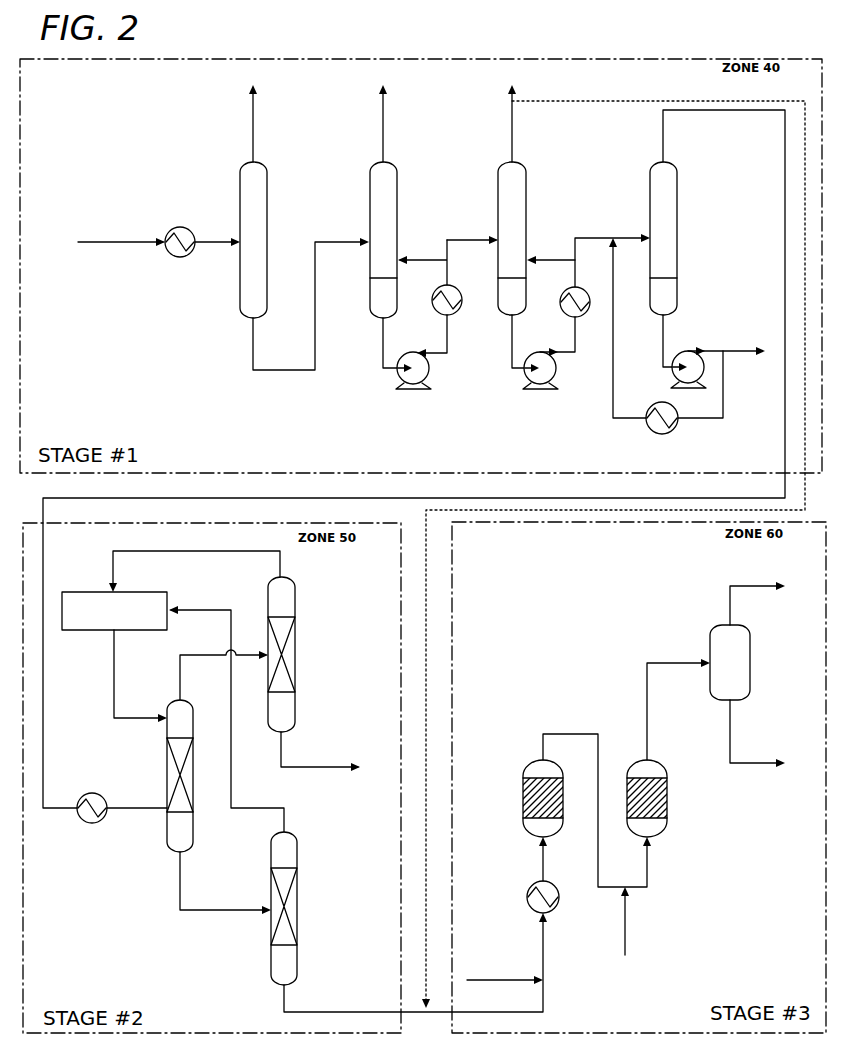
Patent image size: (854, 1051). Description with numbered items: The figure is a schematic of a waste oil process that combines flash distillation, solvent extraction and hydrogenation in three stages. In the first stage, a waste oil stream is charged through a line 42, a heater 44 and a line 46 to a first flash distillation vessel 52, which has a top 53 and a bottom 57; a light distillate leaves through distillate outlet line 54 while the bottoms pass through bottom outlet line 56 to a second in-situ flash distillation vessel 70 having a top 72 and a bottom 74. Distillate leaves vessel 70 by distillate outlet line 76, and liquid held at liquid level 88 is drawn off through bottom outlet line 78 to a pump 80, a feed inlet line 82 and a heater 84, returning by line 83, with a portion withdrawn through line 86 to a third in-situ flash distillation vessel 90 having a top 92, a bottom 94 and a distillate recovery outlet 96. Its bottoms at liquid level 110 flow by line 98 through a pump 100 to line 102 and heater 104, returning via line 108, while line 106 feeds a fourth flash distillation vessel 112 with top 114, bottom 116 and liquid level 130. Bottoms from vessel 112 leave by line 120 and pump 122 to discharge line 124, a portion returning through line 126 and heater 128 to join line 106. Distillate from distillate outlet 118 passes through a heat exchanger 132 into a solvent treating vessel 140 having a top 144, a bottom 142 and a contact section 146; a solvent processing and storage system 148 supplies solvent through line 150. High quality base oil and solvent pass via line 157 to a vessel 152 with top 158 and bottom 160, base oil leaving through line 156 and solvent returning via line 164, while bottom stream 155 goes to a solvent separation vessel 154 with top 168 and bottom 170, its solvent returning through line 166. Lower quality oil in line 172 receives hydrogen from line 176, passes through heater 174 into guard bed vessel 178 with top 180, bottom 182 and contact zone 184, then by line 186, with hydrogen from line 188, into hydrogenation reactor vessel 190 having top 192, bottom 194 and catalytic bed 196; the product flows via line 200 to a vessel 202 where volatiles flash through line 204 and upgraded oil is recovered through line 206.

The line 42 is at (136, 241).
The heater 44 is at (182, 226).
The line 46 is at (220, 240).
The first flash distillation vessel 52 is at (239, 184).
The top 53 is at (268, 186).
The distillate outlet line 54 is at (250, 127).
The bottom outlet line 56 is at (340, 240).
The bottom 57 is at (268, 300).
The second in-situ flash distillation vessel 70 is at (370, 184).
The top 72 is at (398, 185).
The bottom 74 is at (370, 297).
The distillate outlet line 76 is at (383, 125).
The bottom outlet line 78 is at (383, 350).
The pump 80 is at (413, 390).
The feed inlet line 82 is at (438, 352).
The line 83 is at (417, 256).
The heater 84 is at (458, 311).
The line 86 is at (472, 240).
The liquid level 88 is at (383, 278).
The third in-situ flash distillation vessel 90 is at (498, 184).
The top 92 is at (527, 184).
The bottom 94 is at (498, 298).
The distillate recovery outlet 96 is at (512, 122).
The line 98 is at (512, 345).
The pump 100 is at (540, 390).
The line 102 is at (563, 352).
The heater 104 is at (575, 290).
The line 106 is at (600, 238).
The line 108 is at (535, 257).
The liquid level 110 is at (512, 278).
The fourth flash distillation vessel 112 is at (650, 184).
The top 114 is at (678, 184).
The bottom 116 is at (678, 296).
The distillate outlet 118 is at (663, 145).
The line 120 is at (663, 345).
The pump 122 is at (695, 347).
The discharge line 124 is at (748, 351).
The line 126 is at (725, 396).
The heater 128 is at (675, 433).
The liquid level 130 is at (666, 277).
The heat exchanger 132 is at (95, 826).
The solvent treating vessel 140 is at (168, 704).
The bottom 142 is at (170, 848).
The top 144 is at (186, 702).
The contact section 146 is at (167, 760).
The solvent processing and storage system 148 is at (100, 591).
The line 150 is at (114, 665).
The vessel 152 is at (270, 583).
The solvent separation vessel 154 is at (271, 850).
The bottom stream 155 is at (238, 909).
The line 156 is at (343, 767).
The line 157 is at (205, 655).
The top 158 is at (295, 593).
The bottom 160 is at (295, 716).
The line 164 is at (198, 551).
The line 166 is at (243, 806).
The top 168 is at (297, 850).
The bottom 170 is at (297, 960).
The line 172 is at (372, 1011).
The heater 174 is at (533, 888).
The line 176 is at (523, 979).
The vessel 178 is at (526, 780).
The top 180 is at (528, 766).
The bottom 182 is at (528, 826).
The contact zone 184 is at (525, 800).
The line 186 is at (570, 734).
The line 188 is at (626, 924).
The hydrogenation reactor vessel 190 is at (667, 781).
The top 192 is at (663, 766).
The bottom 194 is at (665, 826).
The catalytic bed 196 is at (668, 800).
The line 200 is at (645, 698).
The vessel 202 is at (718, 630).
The line 204 is at (767, 585).
The line 206 is at (768, 765).